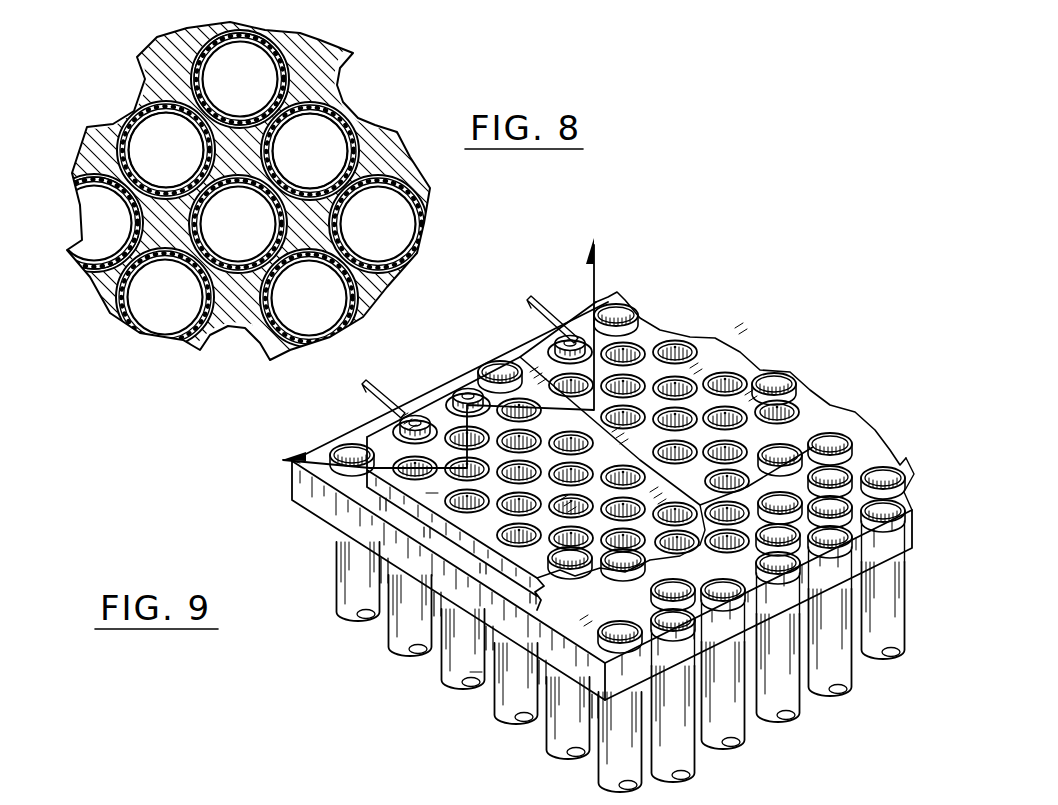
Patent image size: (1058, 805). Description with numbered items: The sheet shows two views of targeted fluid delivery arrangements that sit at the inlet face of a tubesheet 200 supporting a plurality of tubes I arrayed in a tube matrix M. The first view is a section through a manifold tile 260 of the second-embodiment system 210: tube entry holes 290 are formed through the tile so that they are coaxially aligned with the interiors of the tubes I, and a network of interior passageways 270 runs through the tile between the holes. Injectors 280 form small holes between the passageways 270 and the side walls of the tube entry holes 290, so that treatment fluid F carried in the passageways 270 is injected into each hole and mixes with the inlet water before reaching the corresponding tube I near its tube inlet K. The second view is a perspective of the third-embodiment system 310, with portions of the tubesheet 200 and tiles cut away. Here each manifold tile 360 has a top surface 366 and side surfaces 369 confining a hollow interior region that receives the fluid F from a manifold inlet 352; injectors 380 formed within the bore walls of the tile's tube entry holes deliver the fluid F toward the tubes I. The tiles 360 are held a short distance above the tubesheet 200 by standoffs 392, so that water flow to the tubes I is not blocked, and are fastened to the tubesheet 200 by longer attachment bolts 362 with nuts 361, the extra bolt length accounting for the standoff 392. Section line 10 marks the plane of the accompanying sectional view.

In FIG. 8, the fluid delivery system of the second embodiment 210 is at (395, 68).
In FIG. 8, the manifold tile 260 is at (88, 142).
In FIG. 8, the interior passageway 270 is at (146, 68).
In FIG. 8, the injector 280 is at (250, 48).
In FIG. 8, the tube entry hole 290 is at (188, 167).
In FIG. 8, the treatment fluid F is at (190, 116).
In FIG. 9, the targeted fluid delivery system of the third embodiment 310 is at (722, 326).
In FIG. 9, the tubesheet 200 is at (300, 497).
In FIG. 9, the manifold tile 360 is at (380, 440).
In FIG. 9, the nut 361 is at (548, 352).
In FIG. 9, the attachment bolt 362 is at (560, 340).
In FIG. 9, the manifold inlet 352 is at (478, 351).
In FIG. 9, the standoff 392 is at (524, 706).
In FIG. 9, the injector 380 is at (292, 466).
In FIG. 9, the top surface 366 is at (433, 493).
In FIG. 9, the side surface 369 is at (477, 672).
In FIG. 9, the section line 10- 10 is at (435, 338).
In FIG. 9, the tube I is at (345, 590).
In FIG. 9, the tube inlet K is at (748, 369).
In FIG. 9, the tube matrix M is at (752, 760).